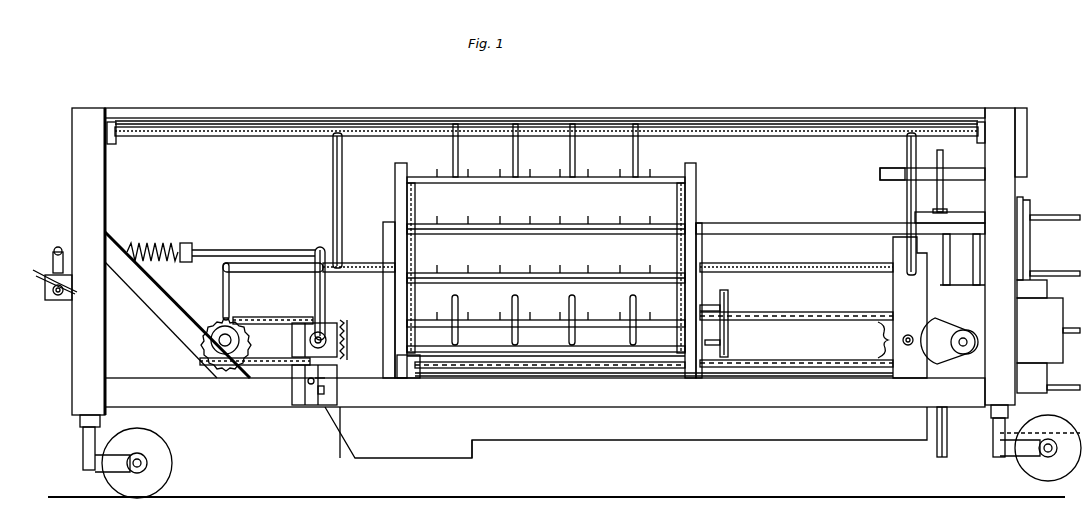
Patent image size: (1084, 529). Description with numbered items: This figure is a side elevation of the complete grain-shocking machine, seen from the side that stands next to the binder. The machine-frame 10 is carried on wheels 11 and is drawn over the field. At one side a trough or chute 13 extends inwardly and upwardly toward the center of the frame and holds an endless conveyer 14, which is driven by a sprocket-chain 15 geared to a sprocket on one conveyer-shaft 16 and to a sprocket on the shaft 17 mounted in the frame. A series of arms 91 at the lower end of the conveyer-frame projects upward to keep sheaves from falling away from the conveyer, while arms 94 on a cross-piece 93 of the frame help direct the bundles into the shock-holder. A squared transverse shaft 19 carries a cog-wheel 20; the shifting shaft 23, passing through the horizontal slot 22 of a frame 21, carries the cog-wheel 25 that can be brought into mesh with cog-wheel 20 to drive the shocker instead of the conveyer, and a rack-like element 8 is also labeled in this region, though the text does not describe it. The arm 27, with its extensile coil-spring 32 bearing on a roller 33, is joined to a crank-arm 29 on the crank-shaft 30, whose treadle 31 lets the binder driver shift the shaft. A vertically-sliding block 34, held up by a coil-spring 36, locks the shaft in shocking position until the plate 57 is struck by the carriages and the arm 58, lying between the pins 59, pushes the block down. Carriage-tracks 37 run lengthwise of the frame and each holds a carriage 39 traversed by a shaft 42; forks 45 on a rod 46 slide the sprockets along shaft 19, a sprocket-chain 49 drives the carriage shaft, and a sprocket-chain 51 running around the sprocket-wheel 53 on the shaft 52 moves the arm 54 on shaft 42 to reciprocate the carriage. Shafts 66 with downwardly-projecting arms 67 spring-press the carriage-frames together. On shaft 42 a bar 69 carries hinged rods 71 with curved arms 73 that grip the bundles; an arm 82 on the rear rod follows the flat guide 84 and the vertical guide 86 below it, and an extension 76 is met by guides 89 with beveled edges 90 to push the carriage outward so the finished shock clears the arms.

The rack bar 8 is at (350, 340).
The machine-frame 10 is at (95, 197).
The wheels 11 is at (170, 463).
The trough or chute 13 is at (395, 196).
The endless conveyer 14 is at (546, 262).
The sprocket-chain 15 is at (730, 303).
The conveyer-shaft 16 is at (710, 305).
The shaft 17 is at (720, 342).
The shaft 19 is at (245, 338).
The cog-wheel 20 is at (215, 325).
The frame 21 is at (300, 374).
The horizontal slot 22 is at (310, 341).
The shaft 23 is at (312, 344).
The cog-wheel 25 is at (345, 324).
The arm 27 is at (325, 289).
The crank-arm 29 is at (53, 261).
The crank-shaft 30 is at (58, 300).
The treadle 31 is at (40, 278).
The extensile coil-spring 32 is at (159, 242).
The roller 33 is at (190, 246).
The vertically-sliding block 34 is at (314, 364).
The extensile coil-spring 36 is at (325, 391).
The carriage-tracks 37 is at (796, 305).
The carriage 39 is at (1048, 280).
The shaft 42 is at (966, 338).
The forks 45 is at (229, 284).
The rod 46 is at (352, 266).
The sprocket-chain 49 is at (275, 318).
The sprocket-chain 51 is at (490, 368).
The shaft 52 is at (910, 307).
The sprocket-wheel 53 is at (872, 340).
The arm 54 is at (953, 346).
The plate 57 is at (1048, 378).
The arm 58 is at (308, 381).
The pins 59 is at (325, 378).
The shaft 66 is at (250, 138).
The downwardly-projecting arms 67 is at (333, 194).
The bar 69 is at (962, 259).
The rod 71 is at (937, 420).
The curved arms 73 is at (1048, 440).
The extension 76 is at (932, 179).
The arm 82 is at (946, 216).
The flat piece or guide-board 84 is at (790, 230).
The vertically-arranged guide 86 is at (626, 432).
The guides 89 is at (955, 176).
The beveled forward edges 90 is at (880, 174).
The arms 91 is at (577, 302).
The cross-piece 93 is at (398, 110).
The arms 94 is at (513, 159).